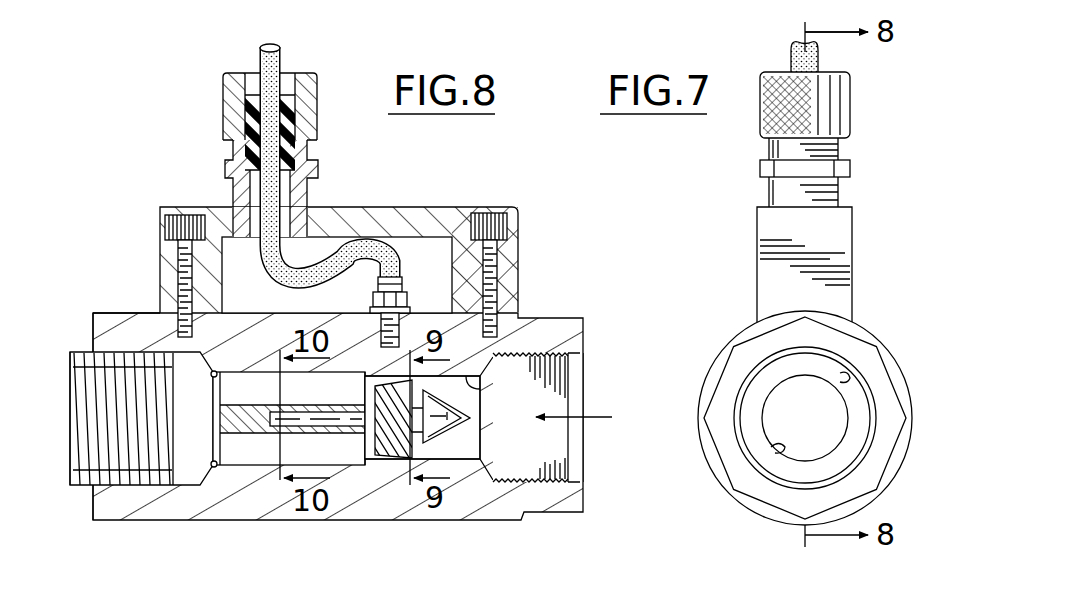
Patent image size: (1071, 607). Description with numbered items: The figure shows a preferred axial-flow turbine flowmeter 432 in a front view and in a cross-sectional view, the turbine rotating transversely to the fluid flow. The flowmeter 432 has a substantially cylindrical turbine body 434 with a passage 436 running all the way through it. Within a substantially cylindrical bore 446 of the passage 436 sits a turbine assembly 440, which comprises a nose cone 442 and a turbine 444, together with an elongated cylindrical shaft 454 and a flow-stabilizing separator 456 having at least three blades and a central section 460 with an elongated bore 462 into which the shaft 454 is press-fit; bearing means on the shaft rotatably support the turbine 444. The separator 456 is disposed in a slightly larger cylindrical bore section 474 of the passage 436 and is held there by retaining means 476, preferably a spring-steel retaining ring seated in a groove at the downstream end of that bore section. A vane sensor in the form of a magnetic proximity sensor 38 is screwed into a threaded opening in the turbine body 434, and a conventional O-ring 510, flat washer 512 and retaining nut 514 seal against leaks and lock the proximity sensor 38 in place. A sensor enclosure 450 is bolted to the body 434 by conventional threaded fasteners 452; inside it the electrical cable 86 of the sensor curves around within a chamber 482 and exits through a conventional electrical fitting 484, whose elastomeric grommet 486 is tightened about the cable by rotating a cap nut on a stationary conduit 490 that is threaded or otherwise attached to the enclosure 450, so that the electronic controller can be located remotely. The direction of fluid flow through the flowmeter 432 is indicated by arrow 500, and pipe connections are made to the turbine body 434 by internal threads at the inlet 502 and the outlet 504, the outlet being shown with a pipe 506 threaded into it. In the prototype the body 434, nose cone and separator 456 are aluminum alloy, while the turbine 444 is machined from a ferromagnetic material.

In FIG. 8, the magnetic proximity sensor 38 is at (374, 334).
In FIG. 8, the electrical cable 86 is at (282, 52).
In FIG. 7, the electrical cable 86 is at (792, 52).
In FIG. 8, the axial-flow turbine flowmeter 432 is at (494, 173).
In FIG. 7, the axial-flow turbine flowmeter 432 is at (898, 258).
In FIG. 8, the turbine body 434 is at (133, 326).
In FIG. 7, the turbine body 434 is at (766, 518).
In FIG. 8, the passage 436 is at (571, 363).
In FIG. 7, the passage 436 is at (826, 422).
In FIG. 8, the turbine assembly 440 is at (461, 428).
In FIG. 8, the nose cone 442 is at (443, 430).
In FIG. 8, the turbine 444 is at (394, 463).
In FIG. 8, the cylindrical bore 446 is at (479, 384).
In FIG. 7, the cylindrical bore 446 is at (776, 443).
In FIG. 8, the sensor enclosure 450 is at (434, 206).
In FIG. 7, the sensor enclosure 450 is at (755, 266).
In FIG. 8, the threaded fasteners 452 is at (183, 222).
In FIG. 8, the shaft 454 is at (358, 432).
In FIG. 8, the flow-stabilizing separator 456 is at (248, 458).
In FIG. 8, the central section 460 is at (234, 380).
In FIG. 8, the elongated bore 462 is at (366, 406).
In FIG. 8, the cylindrical bore section 474 is at (236, 381).
In FIG. 8, the retaining means 476 is at (234, 434).
In FIG. 8, the chamber 482 is at (400, 236).
In FIG. 8, the electrical fitting 484 is at (223, 90).
In FIG. 7, the electrical fitting 484 is at (851, 107).
In FIG. 8, the compression gasket 486 is at (306, 79).
In FIG. 8, the stationary conduit 490 is at (309, 148).
In FIG. 7, the stationary conduit 490 is at (846, 187).
In FIG. 8, the arrow 500 is at (594, 417).
In FIG. 8, the inlet 502 is at (540, 478).
In FIG. 7, the inlet 502 is at (847, 380).
In FIG. 8, the outlet 504 is at (72, 350).
In FIG. 8, the pipe 506 is at (80, 487).
In FIG. 8, the O-ring 510 is at (457, 315).
In FIG. 8, the flat washer 512 is at (407, 297).
In FIG. 8, the retaining nut 514 is at (406, 294).